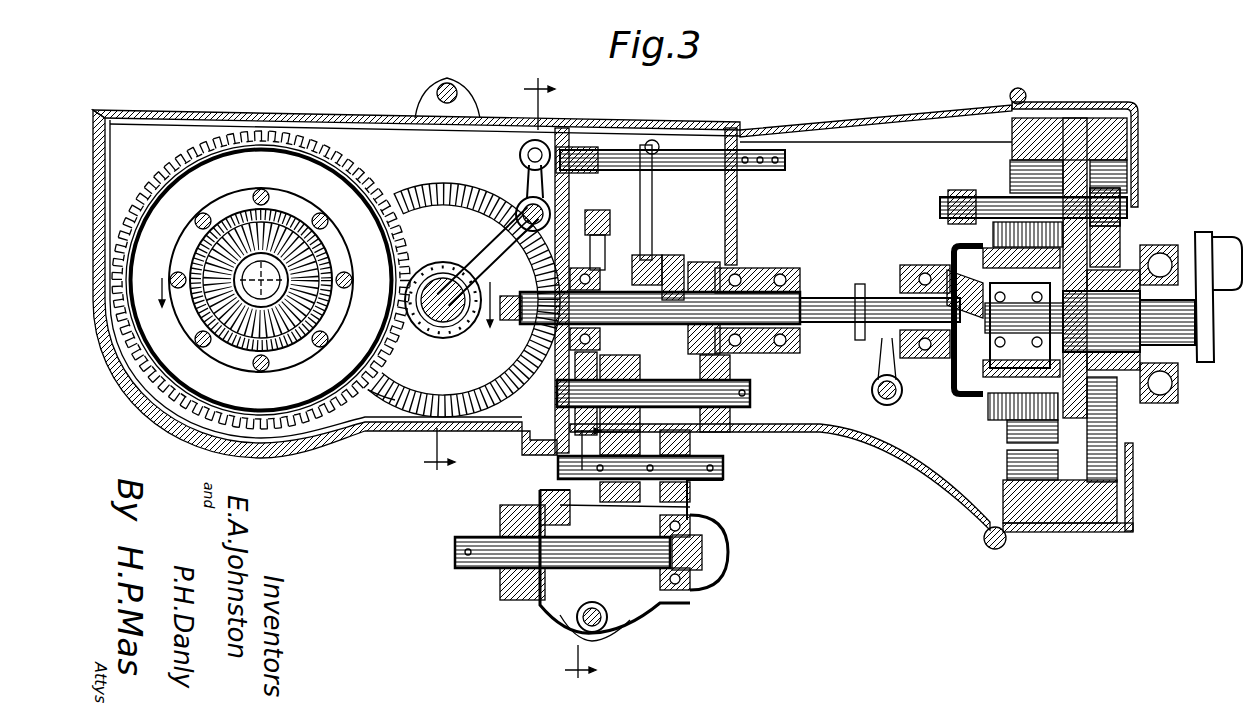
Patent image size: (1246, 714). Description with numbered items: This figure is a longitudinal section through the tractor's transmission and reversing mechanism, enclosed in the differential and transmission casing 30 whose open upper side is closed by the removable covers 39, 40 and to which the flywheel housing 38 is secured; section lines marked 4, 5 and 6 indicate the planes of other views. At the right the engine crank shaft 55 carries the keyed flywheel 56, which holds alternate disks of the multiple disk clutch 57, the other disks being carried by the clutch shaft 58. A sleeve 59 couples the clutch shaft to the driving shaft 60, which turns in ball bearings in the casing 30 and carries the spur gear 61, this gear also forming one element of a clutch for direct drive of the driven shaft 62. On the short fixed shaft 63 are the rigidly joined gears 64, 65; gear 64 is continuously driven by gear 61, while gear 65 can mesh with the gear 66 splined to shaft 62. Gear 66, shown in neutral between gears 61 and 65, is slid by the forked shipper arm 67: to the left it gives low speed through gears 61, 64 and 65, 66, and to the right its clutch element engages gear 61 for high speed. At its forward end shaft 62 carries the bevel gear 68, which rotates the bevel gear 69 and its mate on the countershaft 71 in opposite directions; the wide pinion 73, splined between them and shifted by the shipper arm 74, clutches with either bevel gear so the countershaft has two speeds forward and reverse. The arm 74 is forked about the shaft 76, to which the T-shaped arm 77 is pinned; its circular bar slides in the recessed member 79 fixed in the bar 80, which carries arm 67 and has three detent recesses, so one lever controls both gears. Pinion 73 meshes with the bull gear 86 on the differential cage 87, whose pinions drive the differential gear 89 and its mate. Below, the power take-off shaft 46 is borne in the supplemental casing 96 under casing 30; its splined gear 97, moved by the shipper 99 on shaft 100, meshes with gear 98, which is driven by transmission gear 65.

The differential and transmission casing 30 is at (368, 436).
The flywheel housing 38 is at (1075, 103).
The removable cover 39 is at (870, 122).
The removable cover 40 is at (645, 122).
The implement driving or power take-off shaft 46 is at (456, 548).
The crank shaft 55 is at (300, 268).
The flywheel 56 is at (1134, 148).
The multiple disk clutch 57 is at (1003, 418).
The clutch shaft 58 is at (947, 372).
The sleeve 59 is at (848, 290).
The driving shaft 60 is at (788, 290).
The spur gear 61 is at (697, 268).
The driven shaft 62 is at (604, 290).
The short fixed shaft 63 is at (752, 395).
The gear 64 is at (760, 372).
The gear 65 is at (545, 428).
The gear 66 is at (670, 258).
The shipper arm 67 is at (653, 202).
The bevel gear 68 is at (542, 368).
The bevel gear 69 is at (440, 198).
The countershaft 71 is at (455, 338).
The pinion 73 is at (432, 338).
The shipper arm 74 is at (472, 252).
The shaft 76 is at (522, 204).
The T-shaped arm 77 is at (525, 170).
The recessed member 79 is at (519, 148).
The bar 80 is at (628, 166).
The bull gear 86 is at (352, 170).
The differential cage 87 is at (228, 345).
The differential gear 89 is at (318, 315).
The supplemental casing 96 is at (692, 600).
The gear 97 is at (662, 612).
The gear 98 is at (690, 505).
The shipper 99 is at (570, 612).
The shaft 100 is at (612, 628).
The section line 4 is at (320, 307).
The section line 5 is at (489, 275).
The section line 6 is at (583, 555).